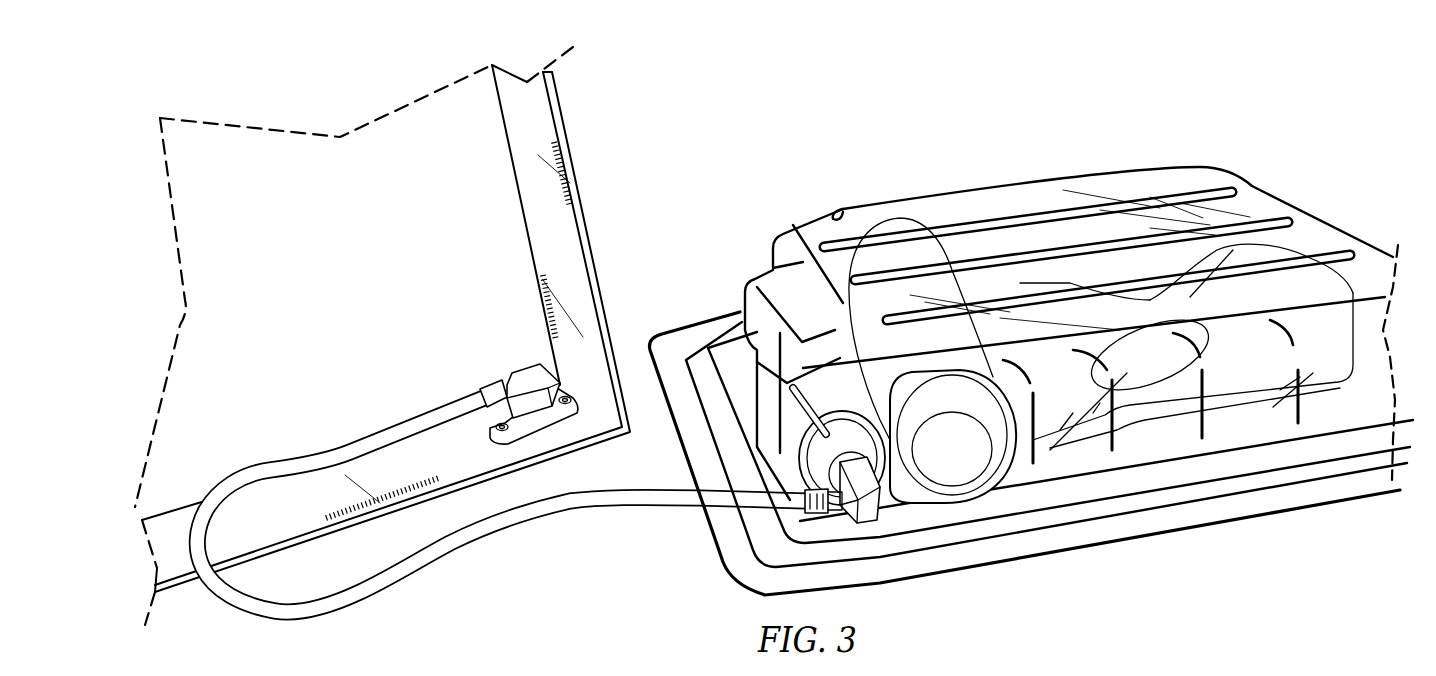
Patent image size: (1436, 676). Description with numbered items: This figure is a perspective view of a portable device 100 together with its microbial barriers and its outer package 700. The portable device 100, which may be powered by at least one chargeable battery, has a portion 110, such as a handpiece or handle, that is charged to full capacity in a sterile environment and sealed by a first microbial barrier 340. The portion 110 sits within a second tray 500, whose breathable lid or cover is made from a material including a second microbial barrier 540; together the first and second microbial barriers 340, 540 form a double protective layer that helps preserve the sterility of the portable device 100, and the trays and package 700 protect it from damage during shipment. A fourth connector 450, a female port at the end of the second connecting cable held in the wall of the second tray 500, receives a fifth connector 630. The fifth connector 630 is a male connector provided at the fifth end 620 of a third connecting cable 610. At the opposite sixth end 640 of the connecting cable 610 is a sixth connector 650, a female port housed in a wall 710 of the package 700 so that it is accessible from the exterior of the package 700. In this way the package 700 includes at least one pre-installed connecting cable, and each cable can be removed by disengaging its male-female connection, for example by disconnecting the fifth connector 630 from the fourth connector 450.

The portable device 100 is at (1228, 148).
The portion of portable device 110 is at (965, 470).
The first microbial barrier 340 is at (1263, 517).
The fourth connector 450 is at (858, 440).
The second tray 500 is at (1135, 453).
The second microbial barrier 540 is at (1318, 528).
The third connecting cable 610 is at (512, 523).
The fifth end 620 is at (762, 515).
The fifth connector 630 is at (870, 527).
The sixth end 640 is at (443, 402).
The sixth connector 650 is at (512, 365).
The package 700 is at (590, 270).
The wall 710 is at (540, 436).